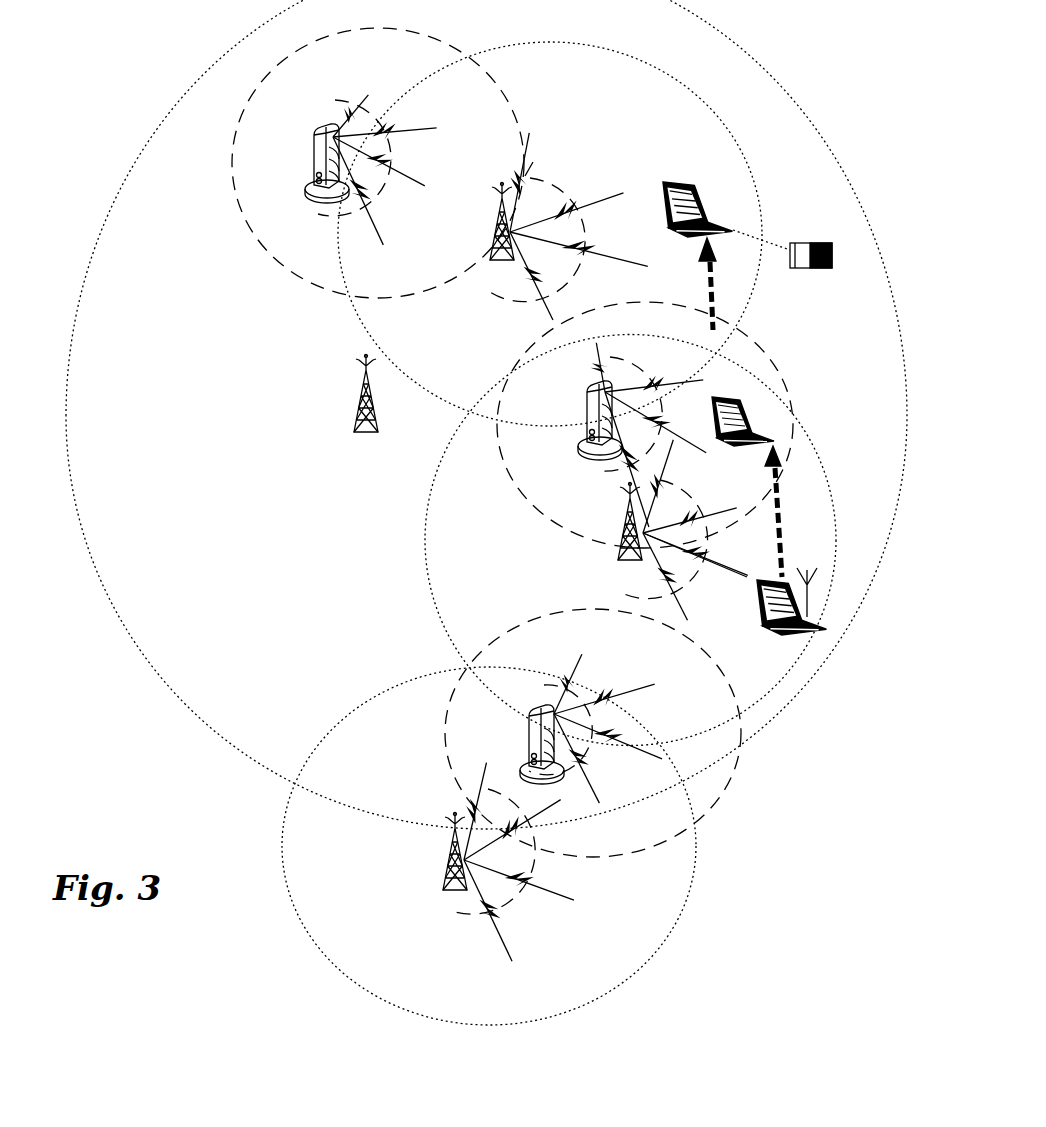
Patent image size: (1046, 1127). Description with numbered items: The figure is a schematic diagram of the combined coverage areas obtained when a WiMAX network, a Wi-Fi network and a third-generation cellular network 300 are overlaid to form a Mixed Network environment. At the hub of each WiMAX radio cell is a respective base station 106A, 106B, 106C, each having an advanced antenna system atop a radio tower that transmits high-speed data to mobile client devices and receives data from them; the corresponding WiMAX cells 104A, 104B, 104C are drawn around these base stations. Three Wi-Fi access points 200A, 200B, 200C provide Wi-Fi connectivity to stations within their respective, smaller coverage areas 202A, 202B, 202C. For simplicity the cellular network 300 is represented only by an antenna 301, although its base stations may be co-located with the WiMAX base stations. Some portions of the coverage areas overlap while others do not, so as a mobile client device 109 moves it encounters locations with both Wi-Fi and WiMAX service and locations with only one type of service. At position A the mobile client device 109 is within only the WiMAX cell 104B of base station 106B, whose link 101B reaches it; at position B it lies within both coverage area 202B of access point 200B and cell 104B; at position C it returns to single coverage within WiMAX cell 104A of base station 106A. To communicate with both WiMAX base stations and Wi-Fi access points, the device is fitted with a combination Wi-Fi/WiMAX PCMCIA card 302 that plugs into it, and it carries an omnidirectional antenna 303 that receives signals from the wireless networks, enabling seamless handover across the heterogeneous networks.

The 3G network 300 is at (124, 748).
The WiMAX cell 104A is at (675, 83).
The WiMAX cell 104B is at (433, 518).
The WiMAX cell 104C is at (681, 911).
The coverage area 202A is at (440, 46).
The coverage area 202B is at (527, 490).
The coverage area 202C is at (746, 745).
The access point 200A is at (313, 153).
The access point 200B is at (590, 396).
The access point 200C is at (533, 724).
The base station 106A is at (497, 232).
The base station 106B is at (621, 554).
The base station 106C is at (446, 882).
The mobile client device 109 is at (678, 184).
The combination Wi-Fi/WiMAX PCMCIA card 302 is at (814, 243).
The omnidirectional antenna 303 is at (812, 603).
The antenna 301 is at (340, 426).
The base station signal 101B is at (716, 528).